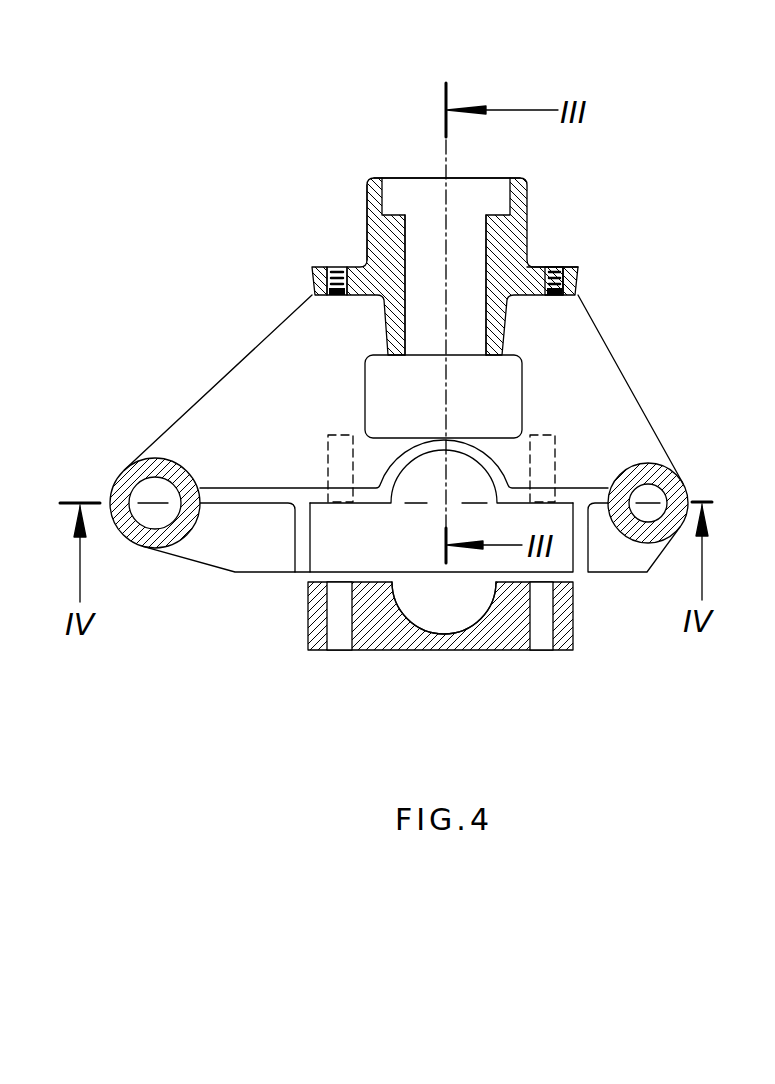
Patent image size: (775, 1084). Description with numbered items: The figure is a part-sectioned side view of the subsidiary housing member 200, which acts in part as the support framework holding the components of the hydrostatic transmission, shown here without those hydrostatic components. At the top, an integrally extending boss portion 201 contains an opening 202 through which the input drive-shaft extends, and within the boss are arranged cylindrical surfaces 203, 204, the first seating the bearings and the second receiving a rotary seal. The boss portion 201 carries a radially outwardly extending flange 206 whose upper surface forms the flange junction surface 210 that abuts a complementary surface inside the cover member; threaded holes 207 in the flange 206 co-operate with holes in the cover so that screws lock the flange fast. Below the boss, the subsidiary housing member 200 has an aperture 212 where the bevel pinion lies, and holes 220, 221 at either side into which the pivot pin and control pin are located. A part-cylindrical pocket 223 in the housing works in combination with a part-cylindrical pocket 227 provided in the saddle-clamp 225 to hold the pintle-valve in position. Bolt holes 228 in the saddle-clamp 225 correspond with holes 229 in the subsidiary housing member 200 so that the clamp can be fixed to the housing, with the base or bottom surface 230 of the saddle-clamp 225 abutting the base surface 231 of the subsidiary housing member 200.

The subsidiary housing member 200 is at (222, 289).
The boss portion 201 is at (507, 243).
The opening 202 is at (482, 307).
The cylindrical surface 203 is at (403, 280).
The cylindrical surface 204 is at (385, 184).
The flange 206 is at (318, 268).
The threaded holes 207 is at (558, 297).
The flange junction surface 210 is at (543, 266).
The aperture 212 is at (430, 400).
The hole 220 is at (645, 518).
The hole 221 is at (152, 490).
The part-cylindrical pocket 223 is at (478, 480).
The saddle-clamp 225 is at (517, 647).
The part-cylindrical pocket 227 is at (443, 626).
The bolt holes 228 is at (318, 641).
The holes 229 is at (352, 480).
The base surface 230 is at (333, 580).
The base surface 231 is at (517, 515).